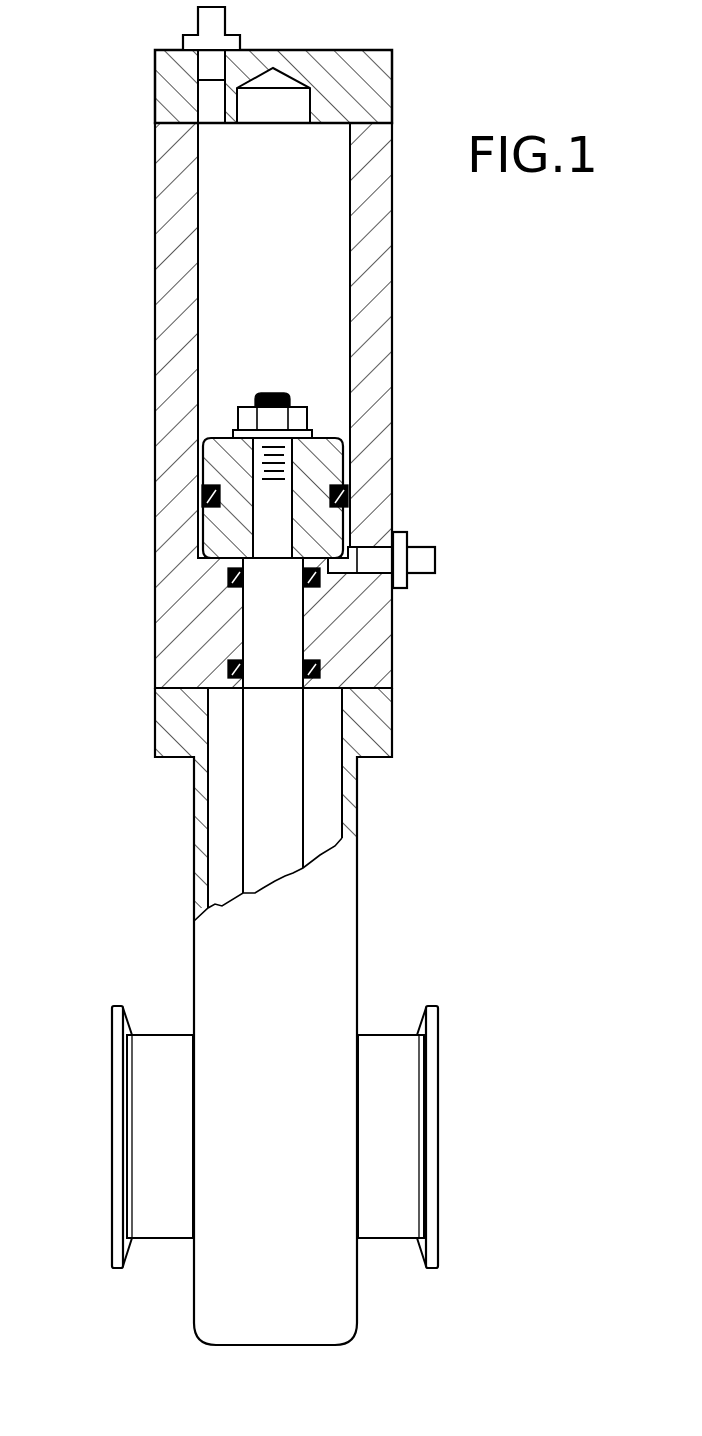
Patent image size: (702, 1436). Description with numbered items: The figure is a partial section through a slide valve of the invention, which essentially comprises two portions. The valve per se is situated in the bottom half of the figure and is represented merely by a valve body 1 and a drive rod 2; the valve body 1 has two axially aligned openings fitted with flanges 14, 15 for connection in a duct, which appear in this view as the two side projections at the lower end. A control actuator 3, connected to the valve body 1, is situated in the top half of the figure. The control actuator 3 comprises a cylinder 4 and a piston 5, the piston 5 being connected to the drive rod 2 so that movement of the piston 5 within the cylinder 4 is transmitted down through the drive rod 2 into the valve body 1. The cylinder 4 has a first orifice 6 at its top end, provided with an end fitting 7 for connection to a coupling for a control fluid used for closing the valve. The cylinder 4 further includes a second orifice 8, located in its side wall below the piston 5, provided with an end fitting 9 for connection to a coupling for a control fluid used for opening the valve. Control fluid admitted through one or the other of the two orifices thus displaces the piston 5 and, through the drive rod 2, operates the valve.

The valve body 1 is at (347, 800).
The drive rod 2 is at (267, 797).
The control actuator 3 is at (398, 414).
The cylinder 4 is at (365, 312).
The piston 5 is at (325, 458).
The first orifice 6 is at (208, 97).
The end fitting 7 is at (207, 20).
The second orifice 8 is at (353, 575).
The end fitting 9 is at (423, 558).
The flange 14 is at (118, 1102).
The flange 15 is at (430, 1105).